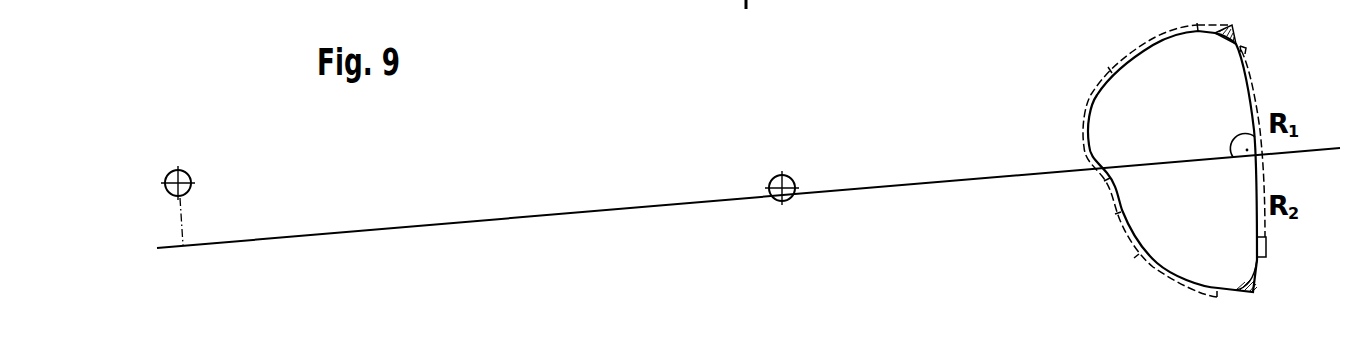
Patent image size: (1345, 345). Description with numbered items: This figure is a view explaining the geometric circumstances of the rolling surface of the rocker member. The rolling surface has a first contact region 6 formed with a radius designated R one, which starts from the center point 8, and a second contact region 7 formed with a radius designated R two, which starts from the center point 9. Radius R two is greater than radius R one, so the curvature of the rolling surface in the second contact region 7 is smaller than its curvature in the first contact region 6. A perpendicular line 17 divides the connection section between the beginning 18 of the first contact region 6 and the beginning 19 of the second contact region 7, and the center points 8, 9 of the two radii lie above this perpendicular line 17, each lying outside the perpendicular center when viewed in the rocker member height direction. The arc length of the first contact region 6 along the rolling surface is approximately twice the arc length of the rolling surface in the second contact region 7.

The first contact region 6 is at (1245, 78).
The second contact region 7 is at (1258, 235).
The center point 8 is at (793, 172).
The center point 9 is at (183, 168).
The perpendicular line 17 is at (950, 185).
The beginning of the first contact region 18 is at (1243, 52).
The beginning of the second contact region 19 is at (1260, 262).